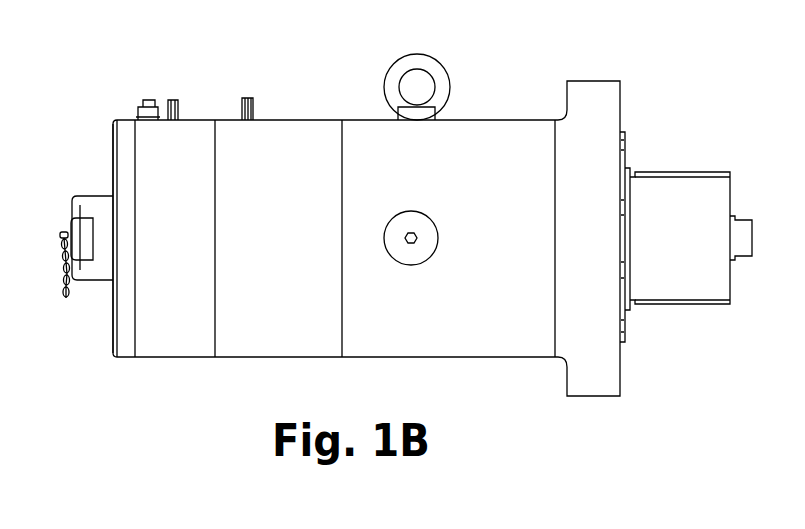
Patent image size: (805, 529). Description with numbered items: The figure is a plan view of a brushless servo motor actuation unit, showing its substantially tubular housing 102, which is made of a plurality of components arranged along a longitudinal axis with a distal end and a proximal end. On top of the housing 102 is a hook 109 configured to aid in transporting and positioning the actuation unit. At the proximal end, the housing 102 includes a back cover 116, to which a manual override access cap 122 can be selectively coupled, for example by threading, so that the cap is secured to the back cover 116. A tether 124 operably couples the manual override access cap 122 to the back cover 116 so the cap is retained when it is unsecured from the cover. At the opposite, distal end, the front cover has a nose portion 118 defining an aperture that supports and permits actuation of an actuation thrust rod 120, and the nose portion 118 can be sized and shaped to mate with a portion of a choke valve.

The housing 102 is at (277, 148).
The hook 109 is at (423, 65).
The back cover 116 is at (127, 143).
The nose portion 118 is at (673, 185).
The actuation thrust rod 120 is at (737, 227).
The manual override access cap 122 is at (88, 272).
The tether 124 is at (67, 283).